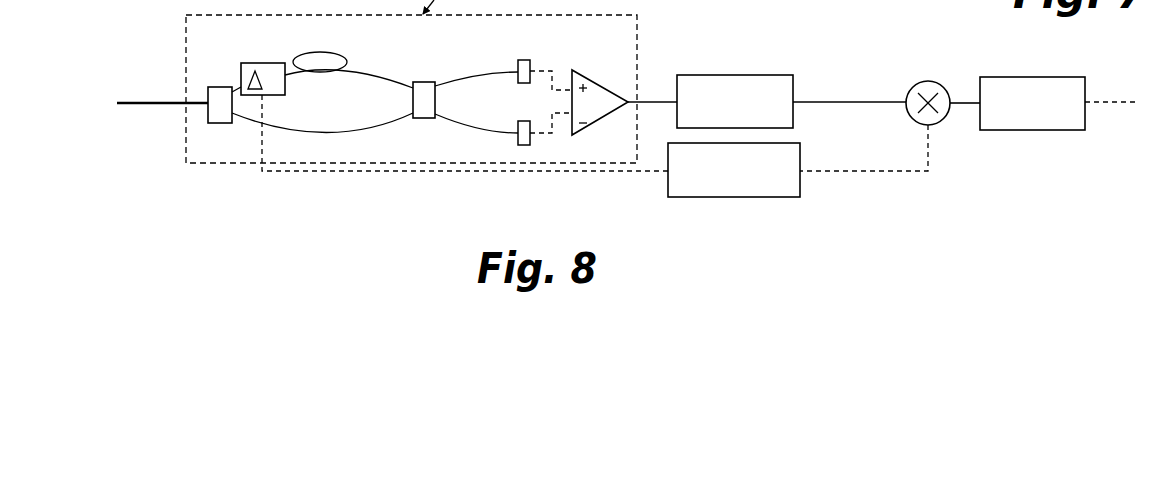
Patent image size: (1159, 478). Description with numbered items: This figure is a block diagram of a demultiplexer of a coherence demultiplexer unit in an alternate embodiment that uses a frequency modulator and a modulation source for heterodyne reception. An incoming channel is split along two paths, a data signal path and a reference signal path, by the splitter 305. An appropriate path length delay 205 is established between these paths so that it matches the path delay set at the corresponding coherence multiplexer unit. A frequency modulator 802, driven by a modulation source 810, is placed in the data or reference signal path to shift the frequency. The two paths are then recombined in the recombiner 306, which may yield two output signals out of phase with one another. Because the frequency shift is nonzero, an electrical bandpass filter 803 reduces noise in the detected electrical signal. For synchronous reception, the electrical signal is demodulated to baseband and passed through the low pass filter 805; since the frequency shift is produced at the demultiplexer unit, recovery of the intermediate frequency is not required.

The splitter 305 is at (208, 100).
The frequency modulator 802 is at (253, 67).
The path length delay 205 is at (320, 49).
The recombiner 306 is at (423, 81).
The electrical bandpass filter 803 is at (735, 87).
The low pass filter 805 is at (1083, 76).
The modulation source 810 is at (802, 198).